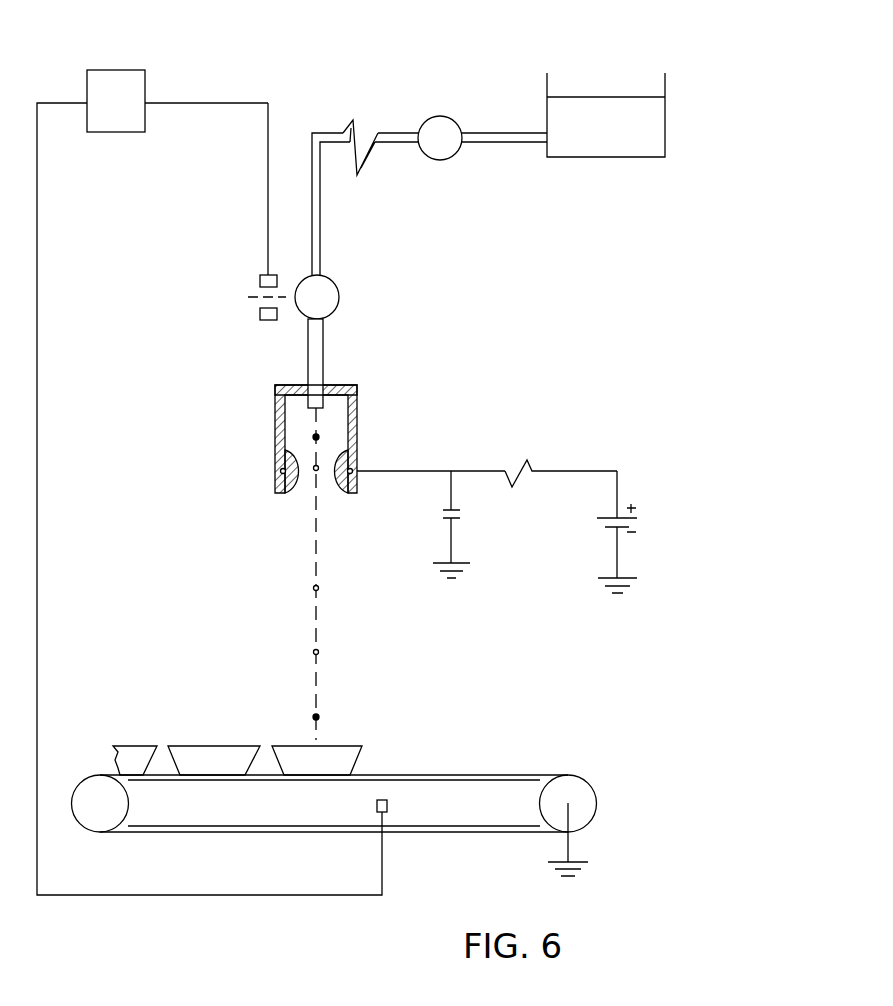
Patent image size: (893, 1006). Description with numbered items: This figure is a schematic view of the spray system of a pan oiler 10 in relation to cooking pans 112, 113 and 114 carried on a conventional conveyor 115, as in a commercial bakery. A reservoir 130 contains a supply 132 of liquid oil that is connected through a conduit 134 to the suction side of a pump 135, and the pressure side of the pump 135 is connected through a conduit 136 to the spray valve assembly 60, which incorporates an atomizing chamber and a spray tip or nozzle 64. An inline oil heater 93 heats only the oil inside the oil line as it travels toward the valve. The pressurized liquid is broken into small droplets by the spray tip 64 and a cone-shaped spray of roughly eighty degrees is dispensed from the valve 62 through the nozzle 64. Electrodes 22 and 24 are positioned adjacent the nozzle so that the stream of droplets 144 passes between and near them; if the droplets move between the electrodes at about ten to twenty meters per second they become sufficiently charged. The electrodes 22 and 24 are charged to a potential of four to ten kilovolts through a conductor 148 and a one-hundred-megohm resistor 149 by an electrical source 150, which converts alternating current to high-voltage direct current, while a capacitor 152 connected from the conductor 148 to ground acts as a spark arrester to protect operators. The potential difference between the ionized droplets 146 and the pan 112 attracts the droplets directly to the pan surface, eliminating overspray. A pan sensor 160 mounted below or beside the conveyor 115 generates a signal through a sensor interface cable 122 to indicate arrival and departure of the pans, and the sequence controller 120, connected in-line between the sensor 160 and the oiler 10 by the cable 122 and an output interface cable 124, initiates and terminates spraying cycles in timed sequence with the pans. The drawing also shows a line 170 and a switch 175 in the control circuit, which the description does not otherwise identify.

The pan oiler 10 is at (490, 106).
The electrode 22 is at (283, 472).
The electrode 24 is at (350, 472).
The spray valve assembly 60 is at (356, 372).
The valve 62 is at (337, 283).
The spray tip or nozzle 64 is at (357, 403).
The inline oil heater 93 is at (347, 123).
The pan 112 is at (330, 762).
The pan 113 is at (247, 757).
The pan 114 is at (148, 755).
The conveyor 115 is at (462, 773).
The sequence controller 120 is at (121, 142).
The sensor interface cable 122 is at (10, 393).
The output interface cable 124 is at (268, 148).
The reservoir 130 is at (667, 82).
The supply of liquid 132 is at (587, 138).
The conduit 134 is at (478, 142).
The pump 135 is at (430, 118).
The conduit 136 is at (322, 227).
The droplets 144 is at (314, 437).
The ionized droplets 146 is at (319, 588).
The conductor 148 is at (410, 470).
The resistor 149 is at (528, 463).
The electrical source 150 is at (635, 518).
The capacitor 152 is at (462, 513).
The pan sensor 160 is at (388, 807).
The control line 170 is at (183, 103).
The switch 175 is at (262, 280).